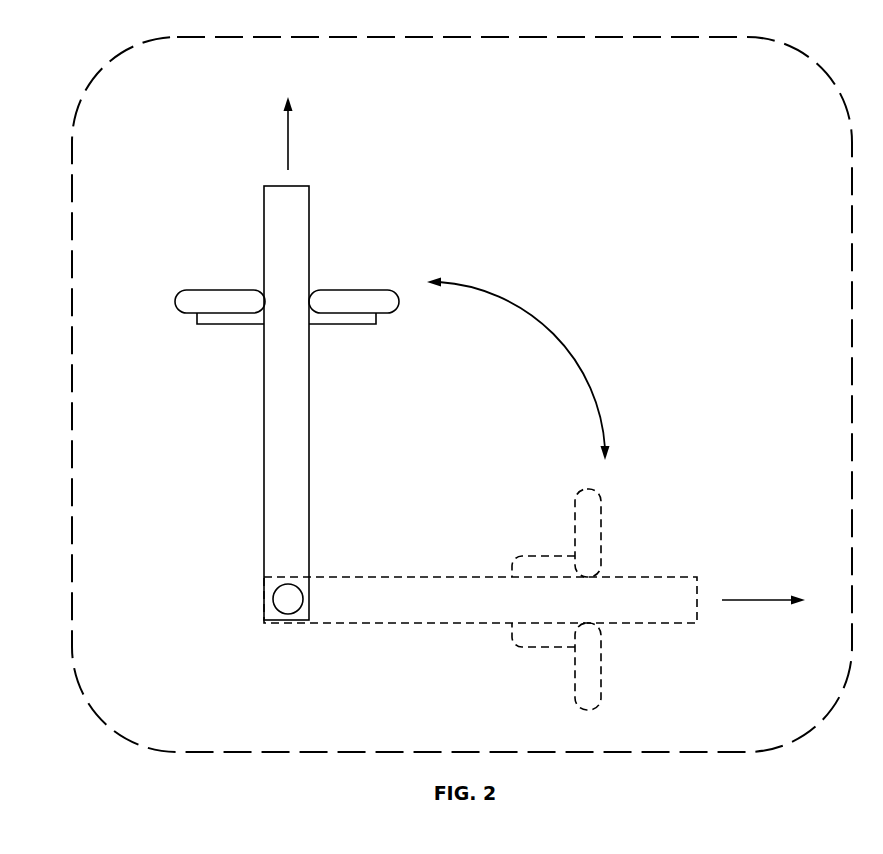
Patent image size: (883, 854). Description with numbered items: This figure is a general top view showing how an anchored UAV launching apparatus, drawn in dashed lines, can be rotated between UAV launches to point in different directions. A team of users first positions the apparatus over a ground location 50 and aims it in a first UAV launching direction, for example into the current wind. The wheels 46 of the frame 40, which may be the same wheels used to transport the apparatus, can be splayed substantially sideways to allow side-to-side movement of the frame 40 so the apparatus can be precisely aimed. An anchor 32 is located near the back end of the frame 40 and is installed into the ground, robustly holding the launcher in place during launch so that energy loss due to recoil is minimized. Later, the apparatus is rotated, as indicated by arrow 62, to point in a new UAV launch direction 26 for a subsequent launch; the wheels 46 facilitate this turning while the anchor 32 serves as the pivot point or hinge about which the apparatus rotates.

The ground location 50 is at (72, 503).
The frame 40 is at (244, 234).
The wheels 46 is at (213, 288).
The anchor 32 is at (251, 566).
The UAV launch direction 26 is at (724, 546).
The arrow indicating rotation 62 is at (568, 358).